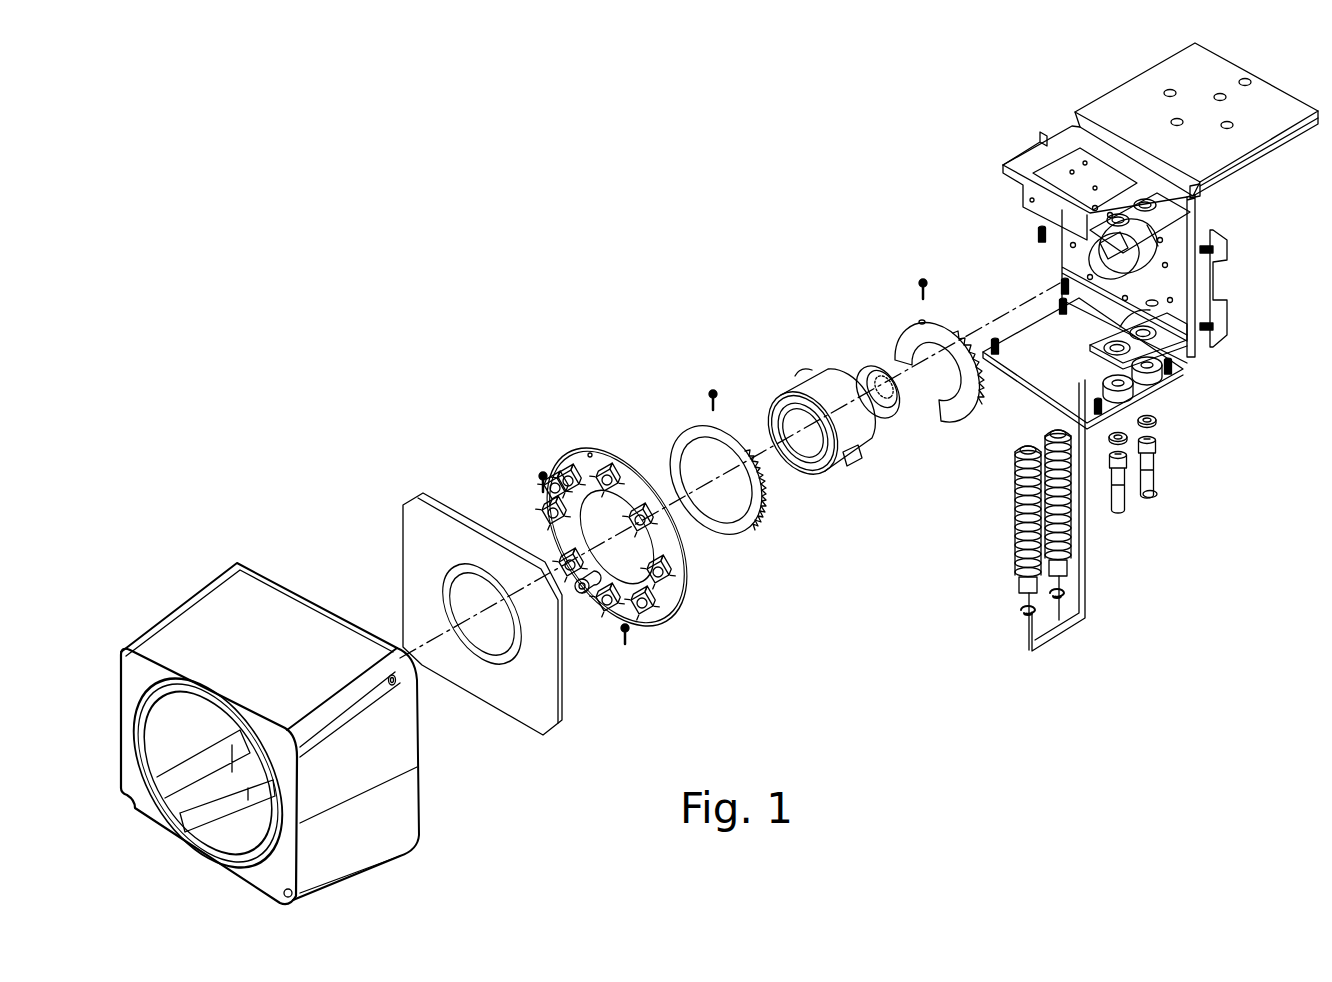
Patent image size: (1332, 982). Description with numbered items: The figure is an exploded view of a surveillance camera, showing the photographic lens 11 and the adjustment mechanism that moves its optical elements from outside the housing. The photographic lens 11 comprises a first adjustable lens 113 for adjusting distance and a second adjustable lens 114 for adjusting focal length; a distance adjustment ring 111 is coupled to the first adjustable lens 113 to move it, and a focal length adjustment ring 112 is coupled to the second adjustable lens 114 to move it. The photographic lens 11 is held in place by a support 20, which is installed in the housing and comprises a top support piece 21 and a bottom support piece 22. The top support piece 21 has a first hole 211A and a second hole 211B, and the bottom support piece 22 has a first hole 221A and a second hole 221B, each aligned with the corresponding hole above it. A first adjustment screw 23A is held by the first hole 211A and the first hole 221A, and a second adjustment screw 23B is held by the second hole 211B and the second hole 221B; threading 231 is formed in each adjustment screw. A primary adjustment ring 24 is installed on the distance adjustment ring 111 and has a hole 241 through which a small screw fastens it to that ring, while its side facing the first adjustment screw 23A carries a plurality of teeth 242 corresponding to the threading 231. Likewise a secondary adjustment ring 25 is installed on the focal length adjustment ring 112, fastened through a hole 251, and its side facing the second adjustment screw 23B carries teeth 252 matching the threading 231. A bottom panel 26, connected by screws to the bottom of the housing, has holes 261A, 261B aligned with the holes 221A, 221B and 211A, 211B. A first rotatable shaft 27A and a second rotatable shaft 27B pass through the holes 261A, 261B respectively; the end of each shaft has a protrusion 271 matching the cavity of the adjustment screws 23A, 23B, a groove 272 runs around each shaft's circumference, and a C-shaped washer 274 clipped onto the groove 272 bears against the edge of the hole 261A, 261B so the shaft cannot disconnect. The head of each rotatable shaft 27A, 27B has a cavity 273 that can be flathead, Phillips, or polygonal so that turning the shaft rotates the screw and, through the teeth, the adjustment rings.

The photographic lens 11 is at (806, 416).
The distance adjustment ring 111 is at (800, 386).
The focal length adjustment ring 112 is at (876, 370).
The first adjustable lens 113 is at (787, 422).
The second adjustable lens 114 is at (893, 403).
The support 20 is at (1183, 268).
The top support piece 21 is at (1030, 158).
The first hole 211A is at (1190, 211).
The second hole 211B is at (1195, 196).
The bottom support piece 22 is at (1164, 329).
The first hole 221A is at (1150, 303).
The second hole 221B is at (1203, 338).
The first adjustment screw 23A is at (998, 538).
The second adjustment screw 23B is at (1052, 432).
The threading 231 is at (1016, 530).
The primary adjustment ring 24 is at (723, 535).
The hole 241 is at (698, 424).
The teeth 242 is at (757, 524).
The secondary adjustment ring 25 is at (927, 372).
The hole 251 is at (923, 322).
The teeth 252 is at (944, 412).
The bottom panel 26 is at (1120, 437).
The hole 261A is at (1130, 392).
The hole 261B is at (1157, 370).
The first rotatable shaft 27A is at (1122, 478).
The second rotatable shaft 27B is at (1213, 466).
The protrusion 271 is at (1153, 440).
The groove 272 is at (1157, 468).
The cavity 273 is at (1158, 485).
The C-shaped washer 274 is at (1022, 611).